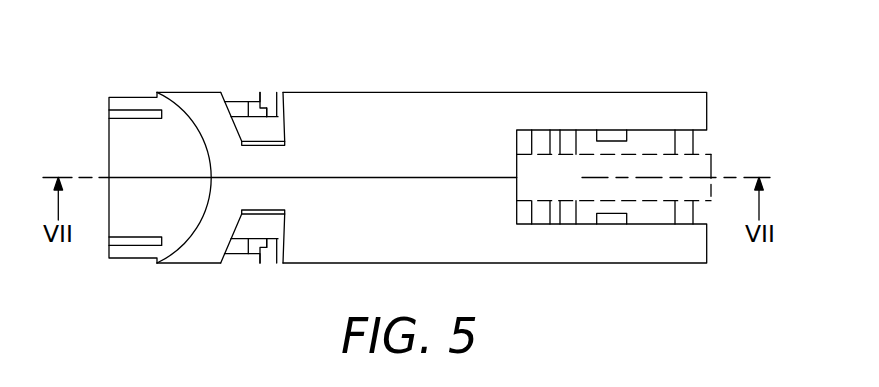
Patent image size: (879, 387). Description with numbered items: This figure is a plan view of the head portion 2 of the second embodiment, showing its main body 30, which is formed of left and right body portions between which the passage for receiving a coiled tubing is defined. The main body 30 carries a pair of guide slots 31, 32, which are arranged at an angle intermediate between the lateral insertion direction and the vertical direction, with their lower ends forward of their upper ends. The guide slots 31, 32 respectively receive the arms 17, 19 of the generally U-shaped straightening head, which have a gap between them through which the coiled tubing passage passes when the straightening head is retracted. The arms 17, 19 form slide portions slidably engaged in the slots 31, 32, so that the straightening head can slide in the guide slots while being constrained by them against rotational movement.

The head portion 2 is at (510, 75).
The main body 30 is at (400, 105).
The guide slot 31 is at (240, 127).
The arm 17 is at (270, 128).
The guide slot 32 is at (241, 228).
The arm 19 is at (270, 227).